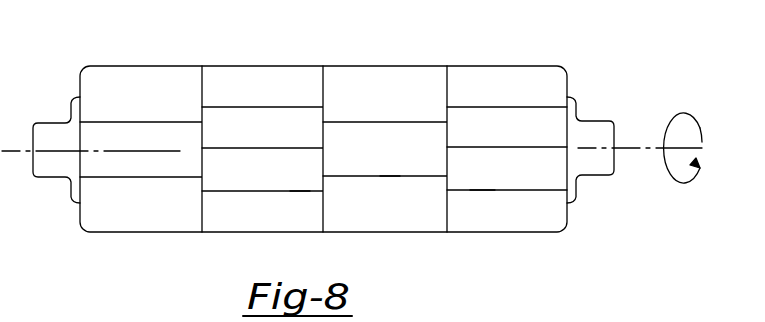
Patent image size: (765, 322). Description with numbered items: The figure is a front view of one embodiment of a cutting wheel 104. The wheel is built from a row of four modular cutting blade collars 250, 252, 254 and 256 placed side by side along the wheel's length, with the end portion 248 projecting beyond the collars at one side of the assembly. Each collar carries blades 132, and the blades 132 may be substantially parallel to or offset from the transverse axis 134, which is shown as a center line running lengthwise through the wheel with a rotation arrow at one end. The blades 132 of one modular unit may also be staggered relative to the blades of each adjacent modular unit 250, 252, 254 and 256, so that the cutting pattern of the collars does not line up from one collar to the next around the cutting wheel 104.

The cutting wheel 104 is at (560, 62).
The blades 132 is at (485, 190).
The transverse axis 134 is at (369, 148).
The shaft end 248 is at (592, 167).
The modular collar 250 is at (112, 75).
The modular collar 252 is at (268, 75).
The modular collar 254 is at (386, 73).
The modular collar 256 is at (508, 73).